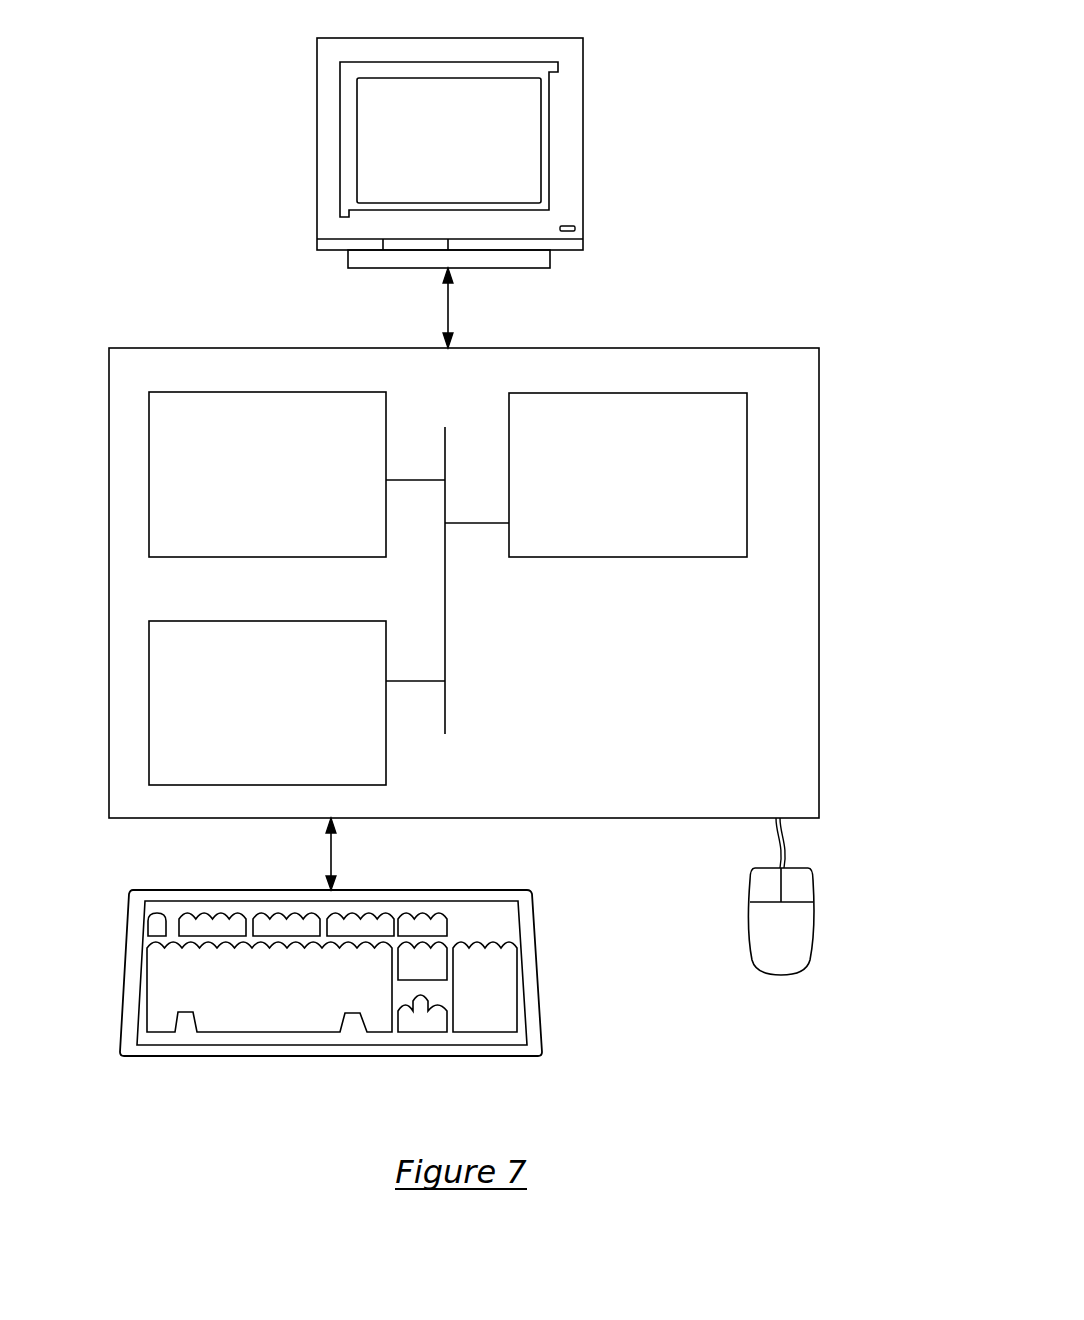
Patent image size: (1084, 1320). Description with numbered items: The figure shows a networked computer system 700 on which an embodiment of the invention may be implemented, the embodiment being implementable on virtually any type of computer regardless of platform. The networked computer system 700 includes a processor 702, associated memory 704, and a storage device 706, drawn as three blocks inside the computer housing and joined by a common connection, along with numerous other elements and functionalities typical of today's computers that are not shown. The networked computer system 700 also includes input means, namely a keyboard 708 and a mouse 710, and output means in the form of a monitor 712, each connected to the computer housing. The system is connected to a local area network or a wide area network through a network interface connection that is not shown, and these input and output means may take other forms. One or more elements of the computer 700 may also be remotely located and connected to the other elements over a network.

The networked computer system 700 is at (787, 232).
The processor 702 is at (605, 477).
The memory 704 is at (242, 489).
The storage device 706 is at (238, 717).
The keyboard 708 is at (233, 1013).
The mouse 710 is at (754, 945).
The monitor 712 is at (422, 157).